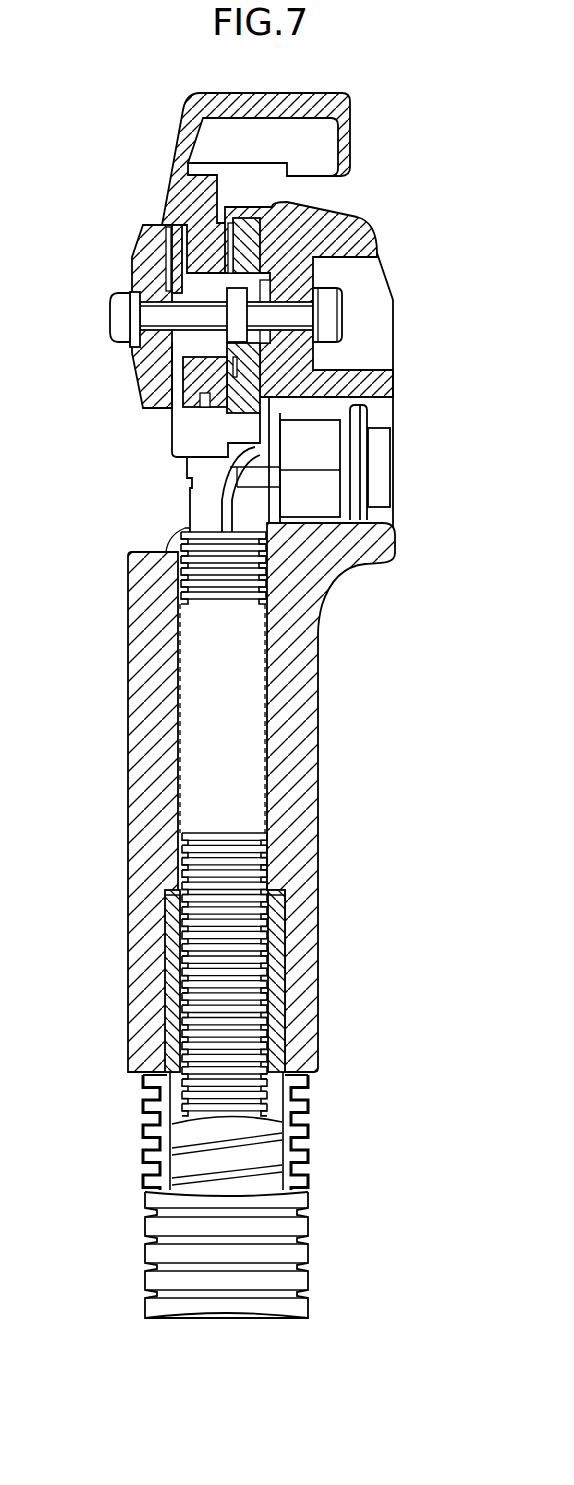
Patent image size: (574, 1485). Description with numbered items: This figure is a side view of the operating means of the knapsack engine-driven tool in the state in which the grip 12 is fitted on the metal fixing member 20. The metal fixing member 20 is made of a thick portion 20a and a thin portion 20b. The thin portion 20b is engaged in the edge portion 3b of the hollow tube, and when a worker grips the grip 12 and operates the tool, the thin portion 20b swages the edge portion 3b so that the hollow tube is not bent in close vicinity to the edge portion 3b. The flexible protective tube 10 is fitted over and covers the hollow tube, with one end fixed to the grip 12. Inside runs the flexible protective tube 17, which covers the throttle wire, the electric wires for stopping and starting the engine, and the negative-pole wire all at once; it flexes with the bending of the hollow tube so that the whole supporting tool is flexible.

The grip 12 is at (302, 758).
The flexible protective tube 17 is at (267, 870).
The metal fixing member 20 is at (290, 1012).
The thick portion 20a is at (273, 930).
The thin portion 20b is at (300, 1093).
The edge portion 3b is at (270, 1158).
The flexible protective tube 10 is at (293, 1268).